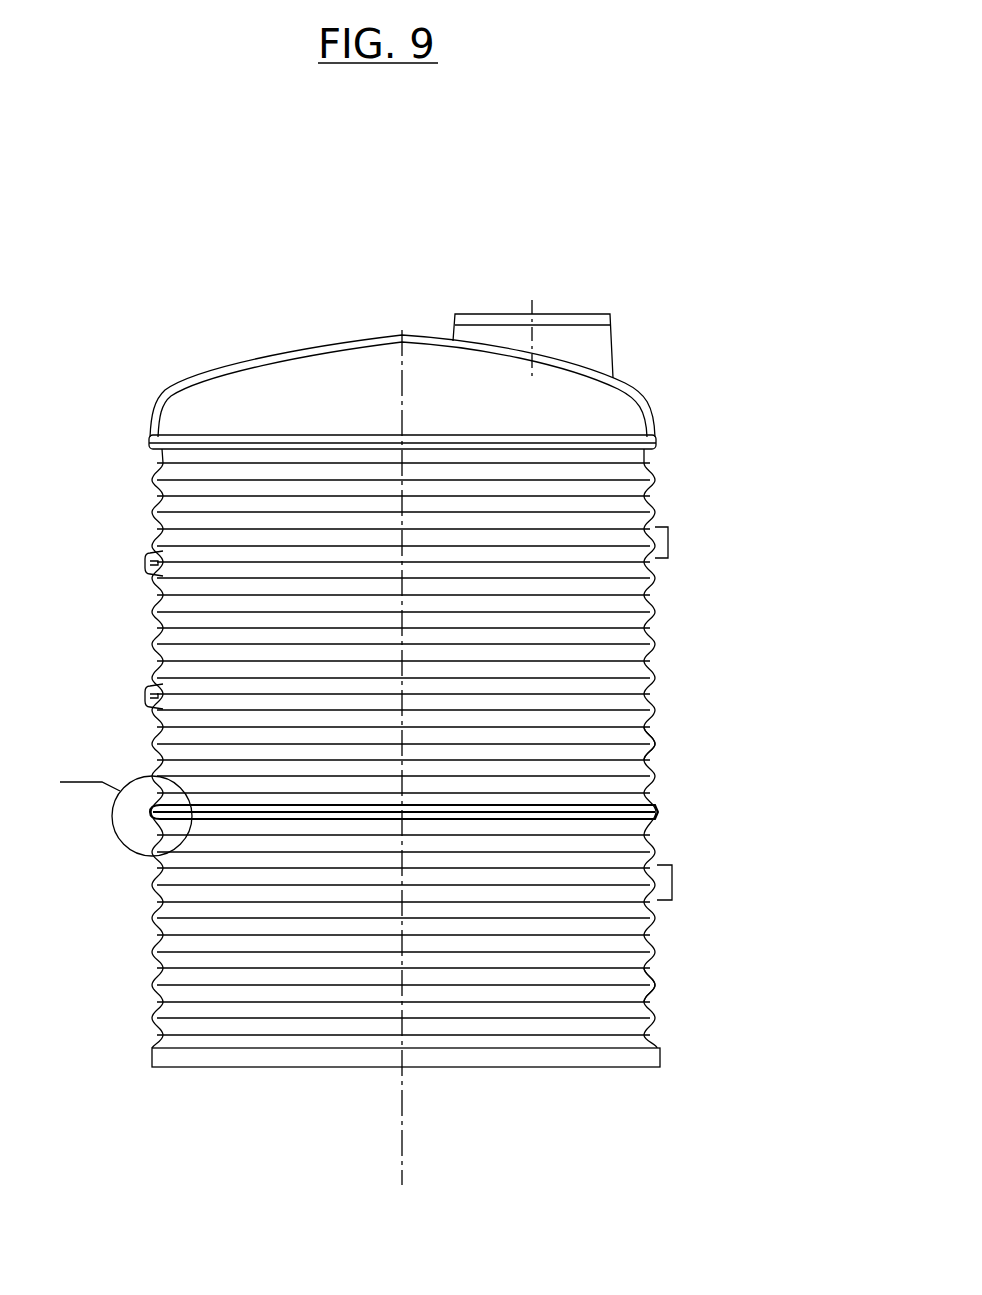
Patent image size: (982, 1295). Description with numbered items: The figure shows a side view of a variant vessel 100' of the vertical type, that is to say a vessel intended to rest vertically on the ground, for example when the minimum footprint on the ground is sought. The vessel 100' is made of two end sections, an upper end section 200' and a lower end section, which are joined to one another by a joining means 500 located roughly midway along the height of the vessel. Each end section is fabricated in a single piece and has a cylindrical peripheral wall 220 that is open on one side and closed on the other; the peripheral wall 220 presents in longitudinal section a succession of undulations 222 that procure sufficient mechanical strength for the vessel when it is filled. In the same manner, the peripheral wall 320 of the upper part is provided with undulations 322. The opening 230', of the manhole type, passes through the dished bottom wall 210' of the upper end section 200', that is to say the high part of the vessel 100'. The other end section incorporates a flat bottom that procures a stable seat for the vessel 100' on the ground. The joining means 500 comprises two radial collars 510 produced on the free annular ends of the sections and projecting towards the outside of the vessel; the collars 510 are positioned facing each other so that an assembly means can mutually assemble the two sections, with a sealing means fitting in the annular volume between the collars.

The vessel of the vertical type 100' is at (428, 654).
The bottom wall 210' is at (402, 347).
The opening 230' is at (489, 299).
The end section 200' is at (489, 621).
The undulations 322 is at (668, 527).
The peripheral wall 320 is at (657, 738).
The radial collar 510 is at (717, 799).
The undulations 222 is at (672, 865).
The peripheral wall 220 is at (660, 987).
The joining means 500 is at (135, 825).